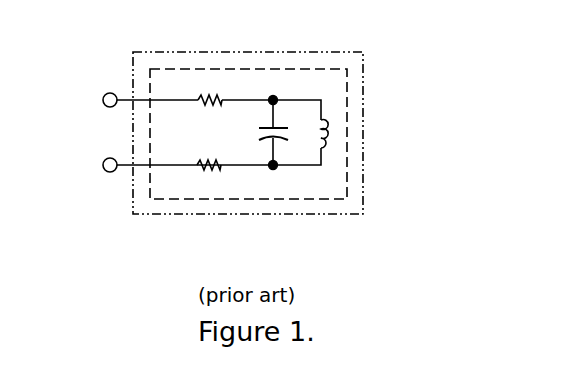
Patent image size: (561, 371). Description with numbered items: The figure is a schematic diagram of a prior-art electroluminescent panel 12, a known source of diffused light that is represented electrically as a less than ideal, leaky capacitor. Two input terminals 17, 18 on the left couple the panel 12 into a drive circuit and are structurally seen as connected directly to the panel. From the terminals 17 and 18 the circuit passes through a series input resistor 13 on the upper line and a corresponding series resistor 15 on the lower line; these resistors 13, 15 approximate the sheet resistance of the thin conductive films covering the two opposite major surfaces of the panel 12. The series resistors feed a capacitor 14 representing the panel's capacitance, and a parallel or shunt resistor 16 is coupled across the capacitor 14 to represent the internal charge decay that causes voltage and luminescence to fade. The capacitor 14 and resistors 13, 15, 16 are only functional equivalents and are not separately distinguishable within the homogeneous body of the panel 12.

The electroluminescent panel 12 is at (365, 62).
The series input resistor 13 is at (206, 94).
The capacitor 14 is at (266, 123).
The series resistor 15 is at (204, 177).
The parallel or shunt resistor 16 is at (337, 132).
The terminal 17 is at (101, 99).
The terminal 18 is at (101, 164).